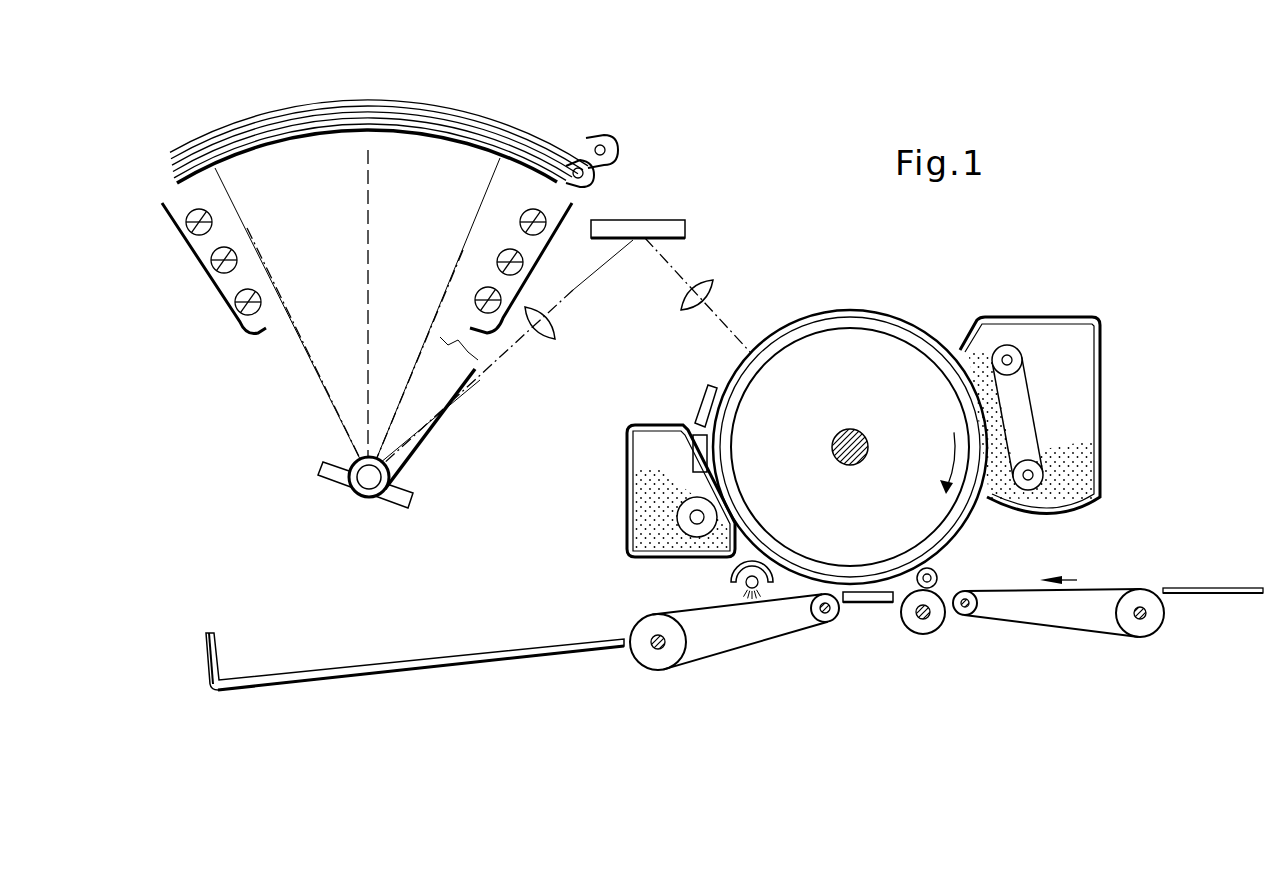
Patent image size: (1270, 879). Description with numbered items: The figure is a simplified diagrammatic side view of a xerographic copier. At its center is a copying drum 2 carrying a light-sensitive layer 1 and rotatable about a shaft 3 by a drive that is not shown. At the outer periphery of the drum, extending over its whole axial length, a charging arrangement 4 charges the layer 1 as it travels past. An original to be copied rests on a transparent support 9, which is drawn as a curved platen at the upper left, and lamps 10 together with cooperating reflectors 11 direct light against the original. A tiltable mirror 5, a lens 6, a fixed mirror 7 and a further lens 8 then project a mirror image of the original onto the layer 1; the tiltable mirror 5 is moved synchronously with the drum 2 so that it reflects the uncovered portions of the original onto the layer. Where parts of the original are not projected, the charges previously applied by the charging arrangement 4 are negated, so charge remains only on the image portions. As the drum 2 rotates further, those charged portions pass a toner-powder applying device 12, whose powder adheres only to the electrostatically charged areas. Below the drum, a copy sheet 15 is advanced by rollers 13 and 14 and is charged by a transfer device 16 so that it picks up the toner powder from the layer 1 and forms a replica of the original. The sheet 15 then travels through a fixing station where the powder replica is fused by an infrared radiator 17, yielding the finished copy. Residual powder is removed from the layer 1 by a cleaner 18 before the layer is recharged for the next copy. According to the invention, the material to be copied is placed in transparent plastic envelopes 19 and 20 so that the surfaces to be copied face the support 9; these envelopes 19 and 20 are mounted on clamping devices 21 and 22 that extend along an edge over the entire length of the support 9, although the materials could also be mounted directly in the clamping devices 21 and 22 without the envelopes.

The light-sensitive layer 1 is at (812, 315).
The copying drum 2 is at (847, 323).
The shaft 3 is at (855, 430).
The charging arrangement 4 is at (700, 410).
The tiltable mirror 5 is at (410, 503).
The lens 6 is at (553, 333).
The fixed mirror 7 is at (672, 209).
The further lens 8 is at (716, 280).
The transparent support 9 is at (180, 180).
The lamps 10 is at (253, 290).
The reflectors 11 is at (245, 332).
The toner-powder applying device 12 is at (1057, 337).
The roller 13 is at (917, 583).
The roller 14 is at (923, 623).
The copy sheet 15 is at (1215, 593).
The transfer device 16 is at (870, 597).
The infrared radiator 17 is at (668, 581).
The cleaner 18 is at (645, 458).
The transparent plastic envelope 19 is at (172, 150).
The transparent plastic envelope 20 is at (175, 165).
The clamping device 21 is at (582, 142).
The clamping device 22 is at (590, 183).